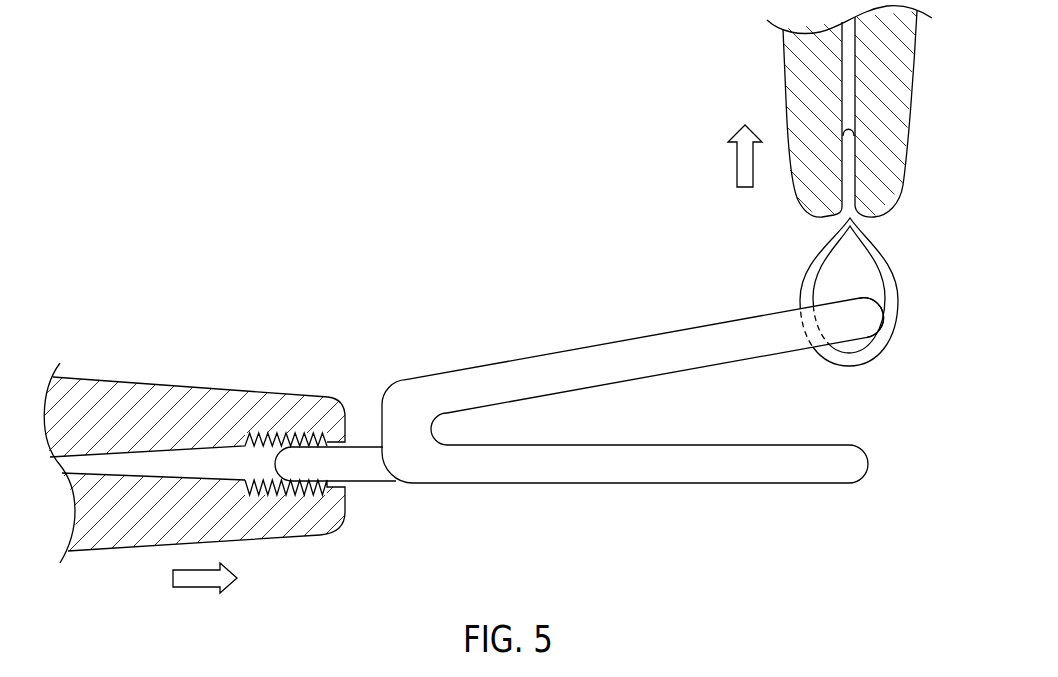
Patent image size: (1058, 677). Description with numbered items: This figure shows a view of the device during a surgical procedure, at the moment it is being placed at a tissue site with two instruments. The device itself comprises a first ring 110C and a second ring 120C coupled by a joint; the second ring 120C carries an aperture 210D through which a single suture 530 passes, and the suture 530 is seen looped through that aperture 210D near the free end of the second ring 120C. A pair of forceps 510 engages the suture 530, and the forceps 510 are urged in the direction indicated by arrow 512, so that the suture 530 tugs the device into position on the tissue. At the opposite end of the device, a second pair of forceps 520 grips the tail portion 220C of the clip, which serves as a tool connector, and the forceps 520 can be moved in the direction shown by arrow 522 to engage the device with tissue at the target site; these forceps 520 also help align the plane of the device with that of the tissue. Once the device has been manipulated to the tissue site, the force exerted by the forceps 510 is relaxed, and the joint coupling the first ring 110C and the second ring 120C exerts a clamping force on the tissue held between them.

The forceps 510 is at (802, 80).
The arrow 512 is at (735, 162).
The suture 530 is at (900, 290).
The forceps 520 is at (188, 388).
The arrow 522 is at (195, 587).
The first ring 110C is at (625, 463).
The second ring 120C is at (638, 353).
The aperture 210D is at (803, 310).
The tail portion of clip 220C is at (358, 465).